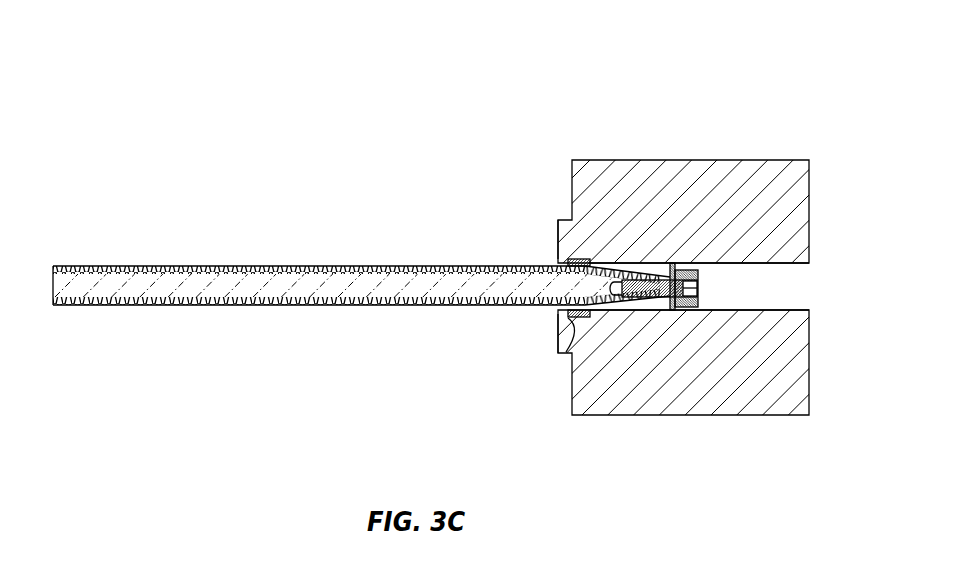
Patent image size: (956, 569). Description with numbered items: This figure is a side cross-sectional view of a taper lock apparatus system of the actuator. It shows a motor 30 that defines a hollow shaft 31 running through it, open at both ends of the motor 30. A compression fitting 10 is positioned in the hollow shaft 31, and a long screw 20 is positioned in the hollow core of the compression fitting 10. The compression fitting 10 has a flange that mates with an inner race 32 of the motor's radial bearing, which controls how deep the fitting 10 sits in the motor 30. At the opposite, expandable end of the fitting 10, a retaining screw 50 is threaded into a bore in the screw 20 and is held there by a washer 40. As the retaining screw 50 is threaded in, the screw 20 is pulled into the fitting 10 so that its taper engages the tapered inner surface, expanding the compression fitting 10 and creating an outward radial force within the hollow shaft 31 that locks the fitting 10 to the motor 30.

The compression fitting 10 is at (558, 260).
The screw 20 is at (225, 245).
The motor 30 is at (743, 147).
The hollow shaft 31 is at (788, 283).
The inner race 32 is at (557, 353).
The washer 40 is at (677, 311).
The retaining screw 50 is at (693, 306).